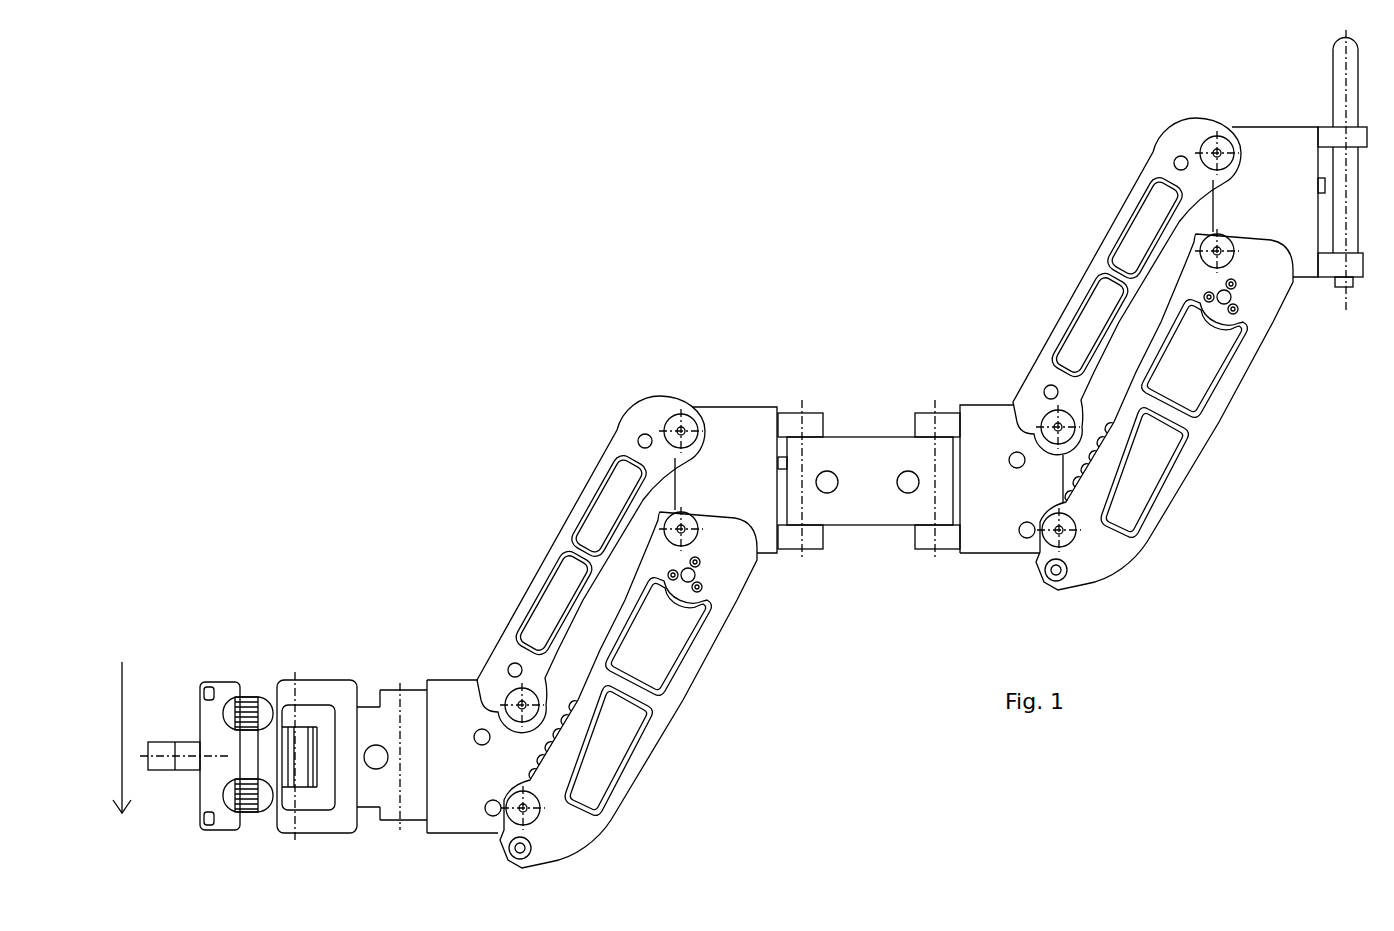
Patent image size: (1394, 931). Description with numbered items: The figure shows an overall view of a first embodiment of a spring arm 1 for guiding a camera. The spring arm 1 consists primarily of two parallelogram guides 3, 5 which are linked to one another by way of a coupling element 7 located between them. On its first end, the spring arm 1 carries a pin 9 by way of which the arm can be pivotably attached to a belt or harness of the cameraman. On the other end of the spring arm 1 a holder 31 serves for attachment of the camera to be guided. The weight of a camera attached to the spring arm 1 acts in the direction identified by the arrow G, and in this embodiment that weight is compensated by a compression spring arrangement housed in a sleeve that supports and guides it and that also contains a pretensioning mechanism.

The spring arm 1 is at (658, 272).
The parallelogram guide 3 is at (1057, 253).
The parallelogram guide 5 is at (527, 527).
The coupling element 7 is at (868, 543).
The pin 9 is at (1312, 57).
The holder 31 is at (252, 637).
The arrow G is at (123, 761).